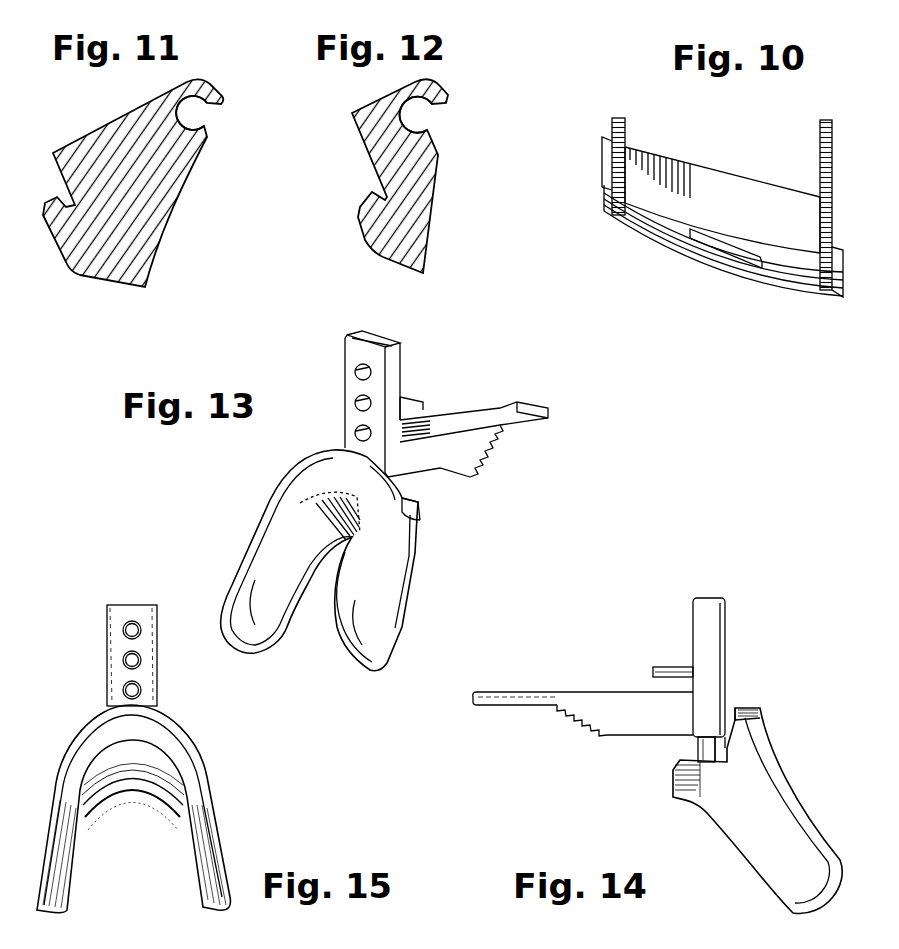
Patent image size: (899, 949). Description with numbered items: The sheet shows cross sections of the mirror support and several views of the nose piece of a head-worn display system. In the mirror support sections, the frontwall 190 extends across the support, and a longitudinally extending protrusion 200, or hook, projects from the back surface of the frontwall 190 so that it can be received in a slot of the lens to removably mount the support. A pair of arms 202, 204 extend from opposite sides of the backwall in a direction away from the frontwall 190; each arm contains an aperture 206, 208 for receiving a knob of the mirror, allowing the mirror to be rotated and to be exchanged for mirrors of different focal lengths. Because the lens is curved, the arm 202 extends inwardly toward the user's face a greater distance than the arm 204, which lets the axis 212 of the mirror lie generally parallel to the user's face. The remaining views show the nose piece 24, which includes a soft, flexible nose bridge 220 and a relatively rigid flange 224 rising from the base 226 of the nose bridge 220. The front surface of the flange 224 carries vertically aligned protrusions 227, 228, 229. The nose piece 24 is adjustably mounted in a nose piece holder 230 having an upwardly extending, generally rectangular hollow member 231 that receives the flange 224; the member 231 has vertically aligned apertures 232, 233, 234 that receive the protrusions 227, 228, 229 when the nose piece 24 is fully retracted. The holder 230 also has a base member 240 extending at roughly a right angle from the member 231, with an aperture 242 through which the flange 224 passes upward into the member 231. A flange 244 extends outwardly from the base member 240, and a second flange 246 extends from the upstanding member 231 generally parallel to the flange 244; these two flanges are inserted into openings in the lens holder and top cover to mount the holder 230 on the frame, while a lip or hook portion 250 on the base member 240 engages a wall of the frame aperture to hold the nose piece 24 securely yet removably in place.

In FIG. 10, the frontwall 190 is at (717, 260).
In FIG. 10, the protrusion 200 is at (697, 223).
In FIG. 10, the axis 212 is at (695, 158).
In FIG. 11, the arm 202 is at (128, 118).
In FIG. 11, the aperture 206 is at (208, 116).
In FIG. 12, the arm 204 is at (385, 154).
In FIG. 12, the aperture 208 is at (430, 108).
In FIG. 13, the nose piece holder 230 is at (414, 412).
In FIG. 14, the nose piece holder 230 is at (639, 661).
In FIG. 13, the upwardly extending member 231 is at (373, 333).
In FIG. 14, the upwardly extending member 231 is at (708, 598).
In FIG. 13, the aperture 232 is at (372, 377).
In FIG. 13, the aperture 233 is at (360, 400).
In FIG. 13, the aperture 234 is at (363, 433).
In FIG. 13, the nose piece 24 is at (472, 500).
In FIG. 13, the nose bridge 220 is at (252, 545).
In FIG. 15, the nose bridge 220 is at (257, 798).
In FIG. 15, the flange 224 is at (153, 675).
In FIG. 14, the flange 224 is at (697, 743).
In FIG. 15, the protrusion 227 is at (127, 628).
In FIG. 15, the protrusion 228 is at (128, 660).
In FIG. 15, the protrusion 229 is at (128, 688).
In FIG. 14, the base 226 is at (690, 787).
In FIG. 14, the base member 240 is at (593, 712).
In FIG. 14, the aperture 242 is at (740, 748).
In FIG. 14, the flange 244 is at (525, 692).
In FIG. 14, the flange 246 is at (675, 667).
In FIG. 14, the lip or hook portion 250 is at (607, 745).